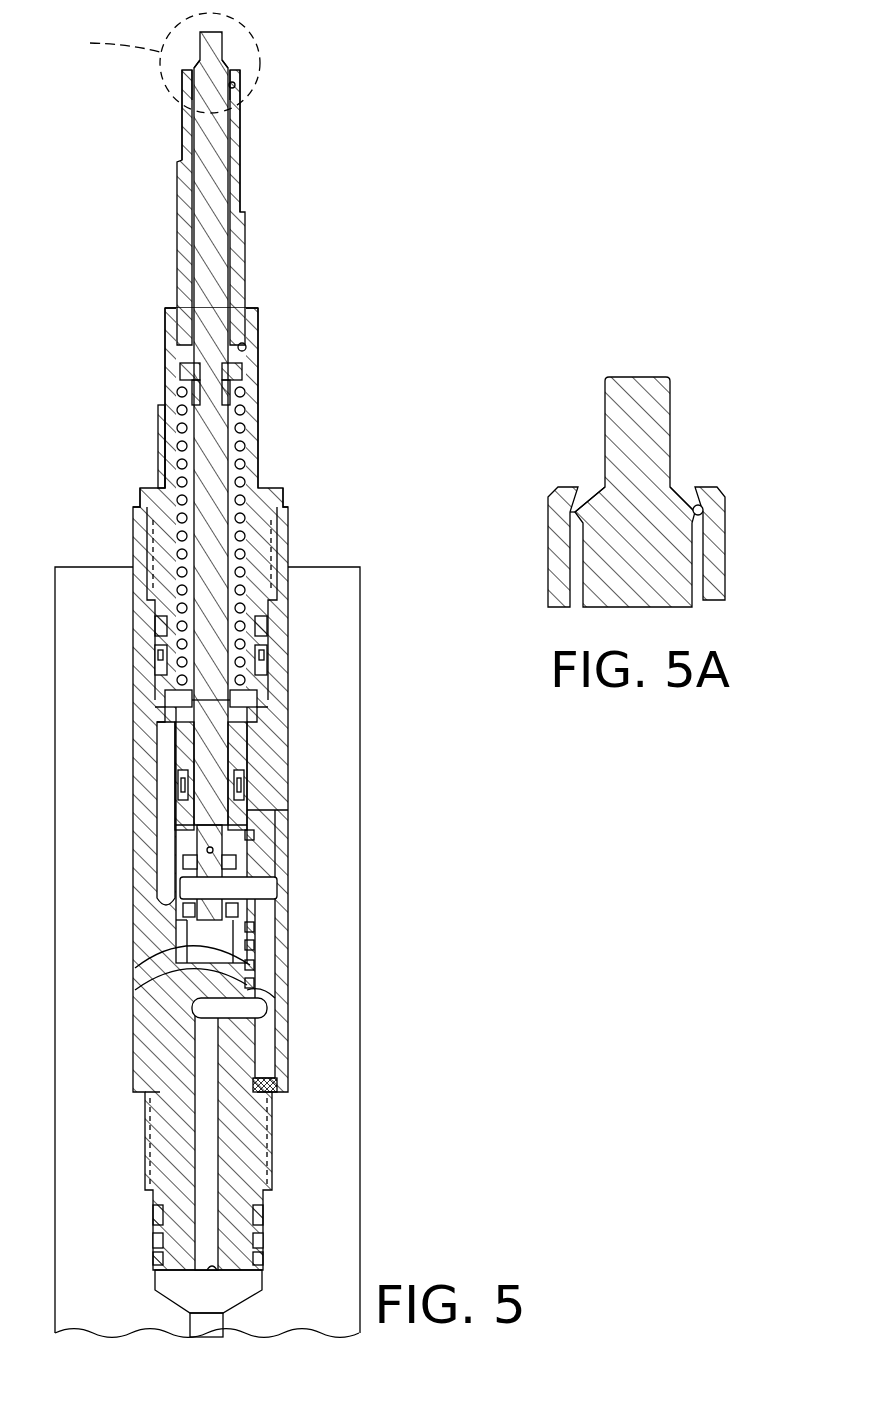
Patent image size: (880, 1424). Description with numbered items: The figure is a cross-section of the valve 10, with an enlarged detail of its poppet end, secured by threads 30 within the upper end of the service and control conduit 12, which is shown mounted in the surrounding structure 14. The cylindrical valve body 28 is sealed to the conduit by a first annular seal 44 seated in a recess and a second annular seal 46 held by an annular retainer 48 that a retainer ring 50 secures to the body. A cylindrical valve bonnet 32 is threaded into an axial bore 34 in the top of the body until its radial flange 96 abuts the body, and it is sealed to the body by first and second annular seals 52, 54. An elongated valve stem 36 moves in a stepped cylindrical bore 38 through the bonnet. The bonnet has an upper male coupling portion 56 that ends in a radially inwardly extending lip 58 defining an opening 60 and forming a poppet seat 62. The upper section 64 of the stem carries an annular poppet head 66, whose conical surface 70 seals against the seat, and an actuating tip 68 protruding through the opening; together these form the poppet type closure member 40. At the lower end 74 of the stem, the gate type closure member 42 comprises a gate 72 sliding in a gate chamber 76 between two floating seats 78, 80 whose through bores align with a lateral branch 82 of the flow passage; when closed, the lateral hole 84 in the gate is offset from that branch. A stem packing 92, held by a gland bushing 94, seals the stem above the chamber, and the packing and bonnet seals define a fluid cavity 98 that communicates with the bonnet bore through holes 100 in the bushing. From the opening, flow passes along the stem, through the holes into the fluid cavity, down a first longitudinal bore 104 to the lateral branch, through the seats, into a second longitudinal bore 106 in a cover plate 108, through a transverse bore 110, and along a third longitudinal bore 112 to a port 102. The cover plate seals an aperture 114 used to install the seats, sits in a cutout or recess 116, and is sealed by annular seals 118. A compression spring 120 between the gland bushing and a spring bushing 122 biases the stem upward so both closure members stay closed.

In FIG. 5, the valve 10 is at (340, 270).
In FIG. 5, the service and control conduit 12 is at (223, 1322).
In FIG. 5, the cylinder head / engine block 14 is at (366, 1012).
In FIG. 5, the valve body 28 is at (128, 826).
In FIG. 5, the threads 30 is at (272, 1148).
In FIG. 5, the valve bonnet 32 is at (262, 460).
In FIG. 5, the axial bore 34 is at (256, 695).
In FIG. 5, the valve stem 36 is at (240, 440).
In FIG. 5, the stepped cylindrical bore 38 is at (246, 347).
In FIG. 5, the poppet type closure member 40 is at (248, 76).
In FIG. 5A, the poppet type closure member 40 is at (622, 526).
In FIG. 5, the gate type closure member 42 is at (178, 921).
In FIG. 5, the first annular seal 44 is at (158, 1212).
In FIG. 5, the second annular seal 46 is at (158, 1242).
In FIG. 5, the annular retainer 48 is at (158, 1260).
In FIG. 5, the retainer ring 50 is at (160, 1275).
In FIG. 5, the first annular seal 52 is at (158, 622).
In FIG. 5, the second annular seal 54 is at (158, 657).
In FIG. 5, the upper male coupling portion 56 is at (190, 412).
In FIG. 5, the radially inwardly extending lip 58 is at (243, 72).
In FIG. 5A, the radially inwardly extending lip 58 is at (714, 487).
In FIG. 5, the opening 60 is at (197, 64).
In FIG. 5A, the opening 60 is at (588, 488).
In FIG. 5, the poppet seat 62 is at (236, 95).
In FIG. 5A, the poppet seat 62 is at (704, 513).
In FIG. 5, the upper section 64 is at (240, 170).
In FIG. 5, the annular poppet head 66 is at (185, 73).
In FIG. 5A, the annular poppet head 66 is at (571, 509).
In FIG. 5, the actuating tip 68 is at (216, 34).
In FIG. 5A, the actuating tip 68 is at (640, 377).
In FIG. 5, the conical surface 70 is at (231, 68).
In FIG. 5A, the conical surface 70 is at (688, 494).
In FIG. 5, the gate 72 is at (195, 888).
In FIG. 5, the lower end 74 is at (250, 762).
In FIG. 5, the gate chamber 76 is at (176, 976).
In FIG. 5, the floating seat 78 is at (175, 950).
In FIG. 5, the floating seat 80 is at (240, 940).
In FIG. 5, the lateral branch 82 is at (278, 888).
In FIG. 5, the lateral hole 84 is at (207, 852).
In FIG. 5, the stem packing 92 is at (243, 775).
In FIG. 5, the gland bushing 94 is at (258, 720).
In FIG. 5, the radial flange 96 is at (284, 497).
In FIG. 5, the fluid cavity 98 is at (166, 712).
In FIG. 5, the holes 100 is at (172, 698).
In FIG. 5, the port 102 is at (214, 1266).
In FIG. 5, the first longitudinal bore 104 is at (166, 778).
In FIG. 5, the second longitudinal bore 106 is at (274, 997).
In FIG. 5, the cover plate 108 is at (278, 1052).
In FIG. 5, the transverse bore 110 is at (262, 1013).
In FIG. 5, the third longitudinal bore 112 is at (200, 1050).
In FIG. 5, the aperture 114 is at (240, 912).
In FIG. 5, the cutout or recess 116 is at (276, 826).
In FIG. 5, the annular seals 118 is at (255, 858).
In FIG. 5, the compression spring 120 is at (160, 440).
In FIG. 5, the spring bushing 122 is at (183, 374).